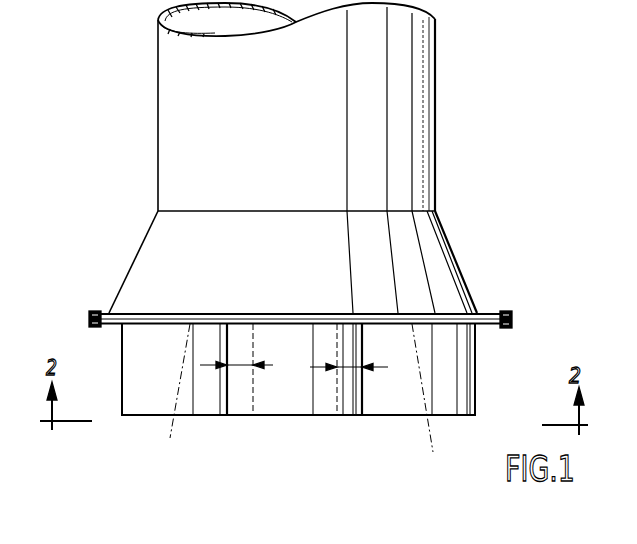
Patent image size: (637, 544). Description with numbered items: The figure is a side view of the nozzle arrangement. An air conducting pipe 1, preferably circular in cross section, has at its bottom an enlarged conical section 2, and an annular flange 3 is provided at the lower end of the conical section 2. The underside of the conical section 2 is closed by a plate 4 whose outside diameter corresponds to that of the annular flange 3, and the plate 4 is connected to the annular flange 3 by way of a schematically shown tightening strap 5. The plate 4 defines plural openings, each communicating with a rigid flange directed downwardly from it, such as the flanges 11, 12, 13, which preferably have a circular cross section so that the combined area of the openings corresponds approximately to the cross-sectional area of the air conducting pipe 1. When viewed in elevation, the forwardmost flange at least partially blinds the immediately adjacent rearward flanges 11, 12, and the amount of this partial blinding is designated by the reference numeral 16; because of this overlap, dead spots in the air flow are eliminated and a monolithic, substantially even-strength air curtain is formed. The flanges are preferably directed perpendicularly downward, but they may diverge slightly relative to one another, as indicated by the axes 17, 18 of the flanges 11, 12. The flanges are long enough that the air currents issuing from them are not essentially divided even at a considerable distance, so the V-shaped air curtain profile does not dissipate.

The air conducting pipe 1 is at (436, 113).
The conical section 2 is at (458, 257).
The annular flange 3 is at (487, 311).
The plate 4 is at (448, 326).
The tightening strap 5 is at (512, 320).
The flange 11 is at (121, 380).
The flange 12 is at (337, 405).
The flange 13 is at (227, 398).
The amount of partial blinding 16 is at (240, 363).
The axis 17 is at (172, 438).
The axis 18 is at (433, 442).